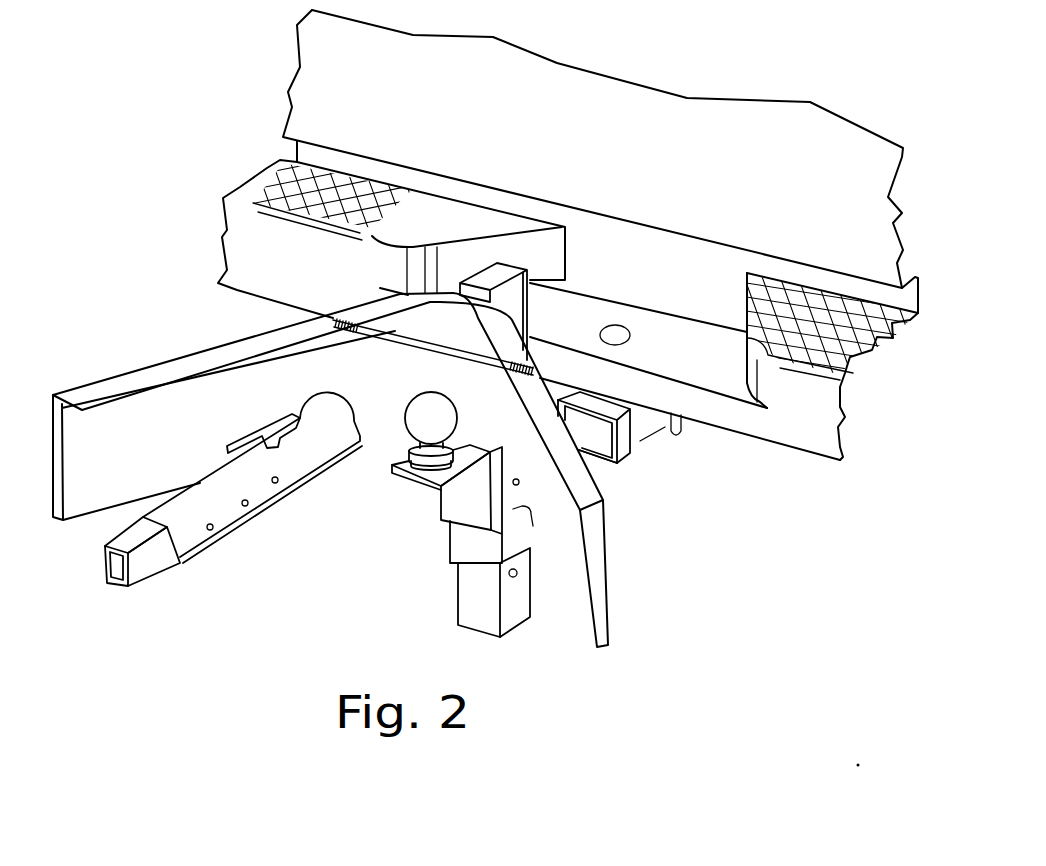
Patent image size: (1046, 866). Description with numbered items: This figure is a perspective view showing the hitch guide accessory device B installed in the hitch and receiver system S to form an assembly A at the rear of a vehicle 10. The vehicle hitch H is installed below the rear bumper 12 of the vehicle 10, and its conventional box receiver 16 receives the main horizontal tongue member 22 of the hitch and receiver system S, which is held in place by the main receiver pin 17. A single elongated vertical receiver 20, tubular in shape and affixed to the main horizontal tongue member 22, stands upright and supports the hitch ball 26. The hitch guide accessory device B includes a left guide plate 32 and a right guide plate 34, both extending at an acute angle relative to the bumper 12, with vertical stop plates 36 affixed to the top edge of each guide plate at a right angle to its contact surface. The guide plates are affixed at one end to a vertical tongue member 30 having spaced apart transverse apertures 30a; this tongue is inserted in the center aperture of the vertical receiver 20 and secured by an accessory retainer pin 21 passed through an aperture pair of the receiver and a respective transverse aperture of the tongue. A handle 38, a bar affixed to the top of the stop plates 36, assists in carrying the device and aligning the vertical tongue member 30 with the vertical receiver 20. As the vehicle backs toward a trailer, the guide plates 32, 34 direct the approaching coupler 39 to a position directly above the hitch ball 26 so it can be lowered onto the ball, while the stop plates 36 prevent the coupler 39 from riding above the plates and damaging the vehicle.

The vehicle 10 is at (238, 139).
The rear bumper 12 is at (237, 237).
The conventional box receiver 16 is at (640, 444).
The main receiver pin 17 is at (671, 416).
The vertical receiver 20 is at (467, 538).
The accessory retainer pin 21 is at (538, 540).
The main horizontal tongue member 22 is at (598, 461).
The hitch ball 26 is at (413, 427).
The vertical tongue member 30 is at (475, 623).
The transverse apertures 30a is at (509, 575).
The left guide plate 32 is at (98, 500).
The right guide plate 34 is at (587, 557).
The vertical stop plates 36 is at (243, 323).
The handle 38 is at (417, 345).
The coupler 39 is at (253, 500).
The hitch guide accessory device B is at (150, 332).
The hitch and receiver system S is at (407, 533).
The vehicle hitch H is at (697, 457).
The assembly A is at (713, 542).